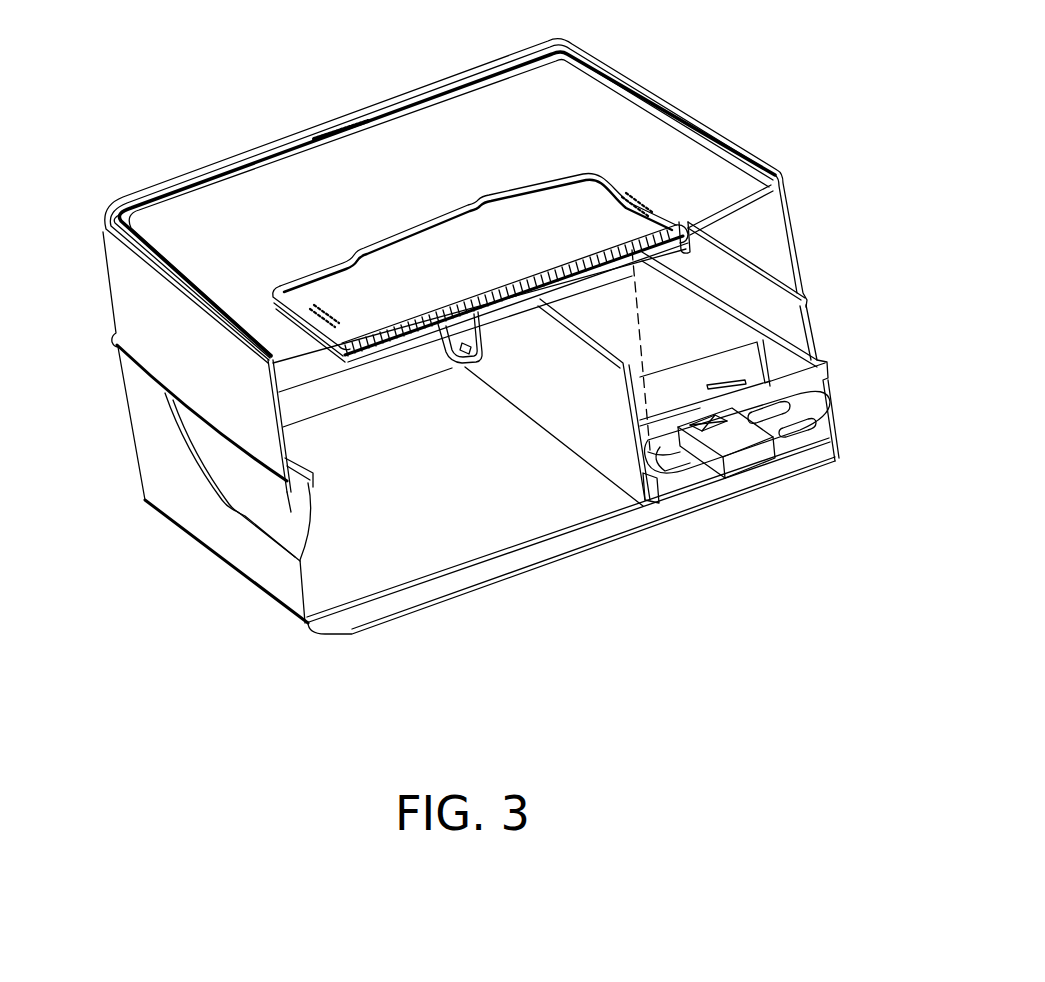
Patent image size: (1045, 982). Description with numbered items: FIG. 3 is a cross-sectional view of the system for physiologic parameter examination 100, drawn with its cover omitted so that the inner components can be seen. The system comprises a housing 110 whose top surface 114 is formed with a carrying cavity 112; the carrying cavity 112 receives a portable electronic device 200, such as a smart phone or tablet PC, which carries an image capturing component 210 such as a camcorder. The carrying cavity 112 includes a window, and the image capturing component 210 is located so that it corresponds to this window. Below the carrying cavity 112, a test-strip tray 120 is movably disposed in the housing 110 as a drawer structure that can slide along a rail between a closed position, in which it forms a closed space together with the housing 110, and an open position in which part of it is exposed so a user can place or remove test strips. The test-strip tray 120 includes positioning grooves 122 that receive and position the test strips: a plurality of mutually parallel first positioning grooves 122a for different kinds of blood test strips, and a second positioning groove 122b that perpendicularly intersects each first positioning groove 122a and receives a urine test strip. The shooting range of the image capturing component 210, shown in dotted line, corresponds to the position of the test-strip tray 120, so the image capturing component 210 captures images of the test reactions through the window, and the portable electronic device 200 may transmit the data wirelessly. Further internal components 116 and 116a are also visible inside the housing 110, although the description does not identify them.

The system for physiologic parameter examination 100 is at (790, 243).
The housing 110 is at (127, 304).
The carrying cavity 112 is at (383, 222).
The top surface 114 is at (588, 92).
The partition plate 116 is at (477, 328).
The hook 116a is at (480, 362).
The test-strip tray 120 is at (830, 432).
The positioning grooves 122 is at (741, 509).
The first positioning grooves 122a is at (781, 420).
The second positioning groove 122b is at (726, 501).
The portable electronic device 200 is at (563, 207).
The image capturing component 210 is at (645, 247).